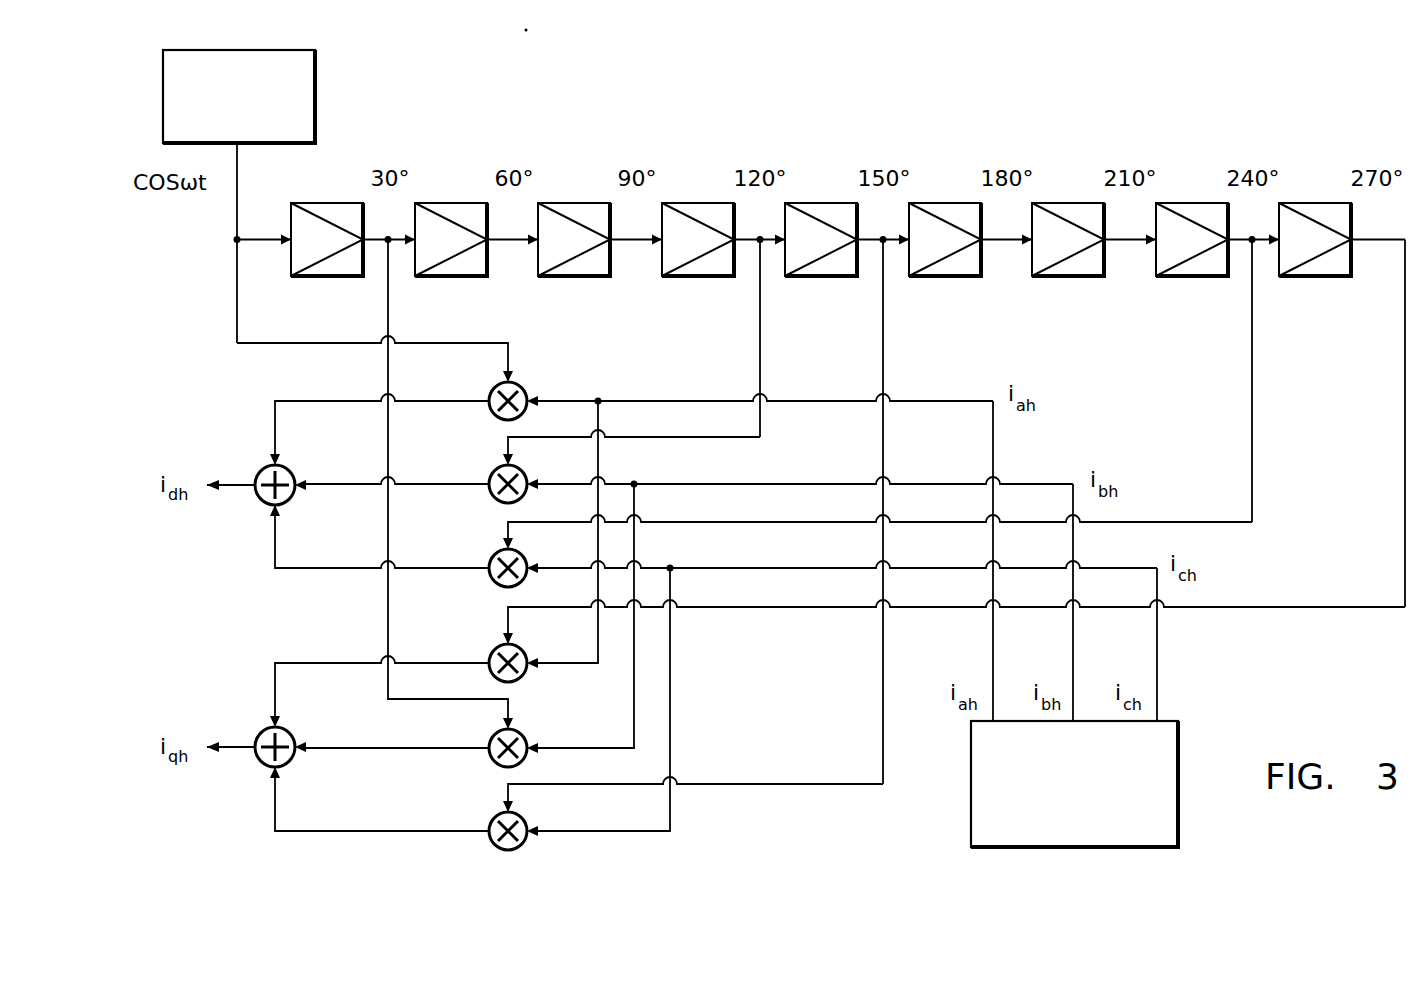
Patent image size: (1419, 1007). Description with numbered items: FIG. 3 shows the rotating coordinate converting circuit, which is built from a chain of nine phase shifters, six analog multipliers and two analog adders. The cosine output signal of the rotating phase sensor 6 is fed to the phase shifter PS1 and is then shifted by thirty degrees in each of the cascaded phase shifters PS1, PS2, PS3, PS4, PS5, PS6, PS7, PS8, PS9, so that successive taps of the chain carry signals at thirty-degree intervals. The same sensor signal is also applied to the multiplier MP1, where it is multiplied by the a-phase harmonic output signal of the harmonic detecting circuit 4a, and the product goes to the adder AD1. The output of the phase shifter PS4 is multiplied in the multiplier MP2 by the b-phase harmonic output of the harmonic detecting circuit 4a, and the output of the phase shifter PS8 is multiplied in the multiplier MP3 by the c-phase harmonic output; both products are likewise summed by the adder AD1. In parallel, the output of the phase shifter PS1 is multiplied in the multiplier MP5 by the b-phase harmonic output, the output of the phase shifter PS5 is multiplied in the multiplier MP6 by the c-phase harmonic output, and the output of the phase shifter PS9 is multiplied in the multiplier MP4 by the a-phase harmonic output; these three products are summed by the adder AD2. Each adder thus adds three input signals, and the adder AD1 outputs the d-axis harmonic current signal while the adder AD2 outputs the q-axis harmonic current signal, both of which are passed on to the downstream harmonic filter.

The rotating phase sensor 6 is at (318, 70).
The 6n±1-order harmonic detecting circuit 4a is at (1180, 738).
The phase shifter PS1 is at (336, 270).
The phase shifter PS2 is at (460, 270).
The phase shifter PS3 is at (583, 270).
The phase shifter PS4 is at (707, 270).
The phase shifter PS5 is at (830, 270).
The phase shifter PS6 is at (954, 270).
The phase shifter PS7 is at (1077, 270).
The phase shifter PS8 is at (1201, 270).
The phase shifter PS9 is at (1324, 270).
The analog multiplier MP1 is at (498, 386).
The analog multiplier MP2 is at (498, 469).
The analog multiplier MP3 is at (498, 553).
The analog multiplier MP4 is at (498, 648).
The analog multiplier MP5 is at (523, 736).
The analog multiplier MP6 is at (498, 816).
The analog adder AD1 is at (290, 468).
The analog adder AD2 is at (290, 730).